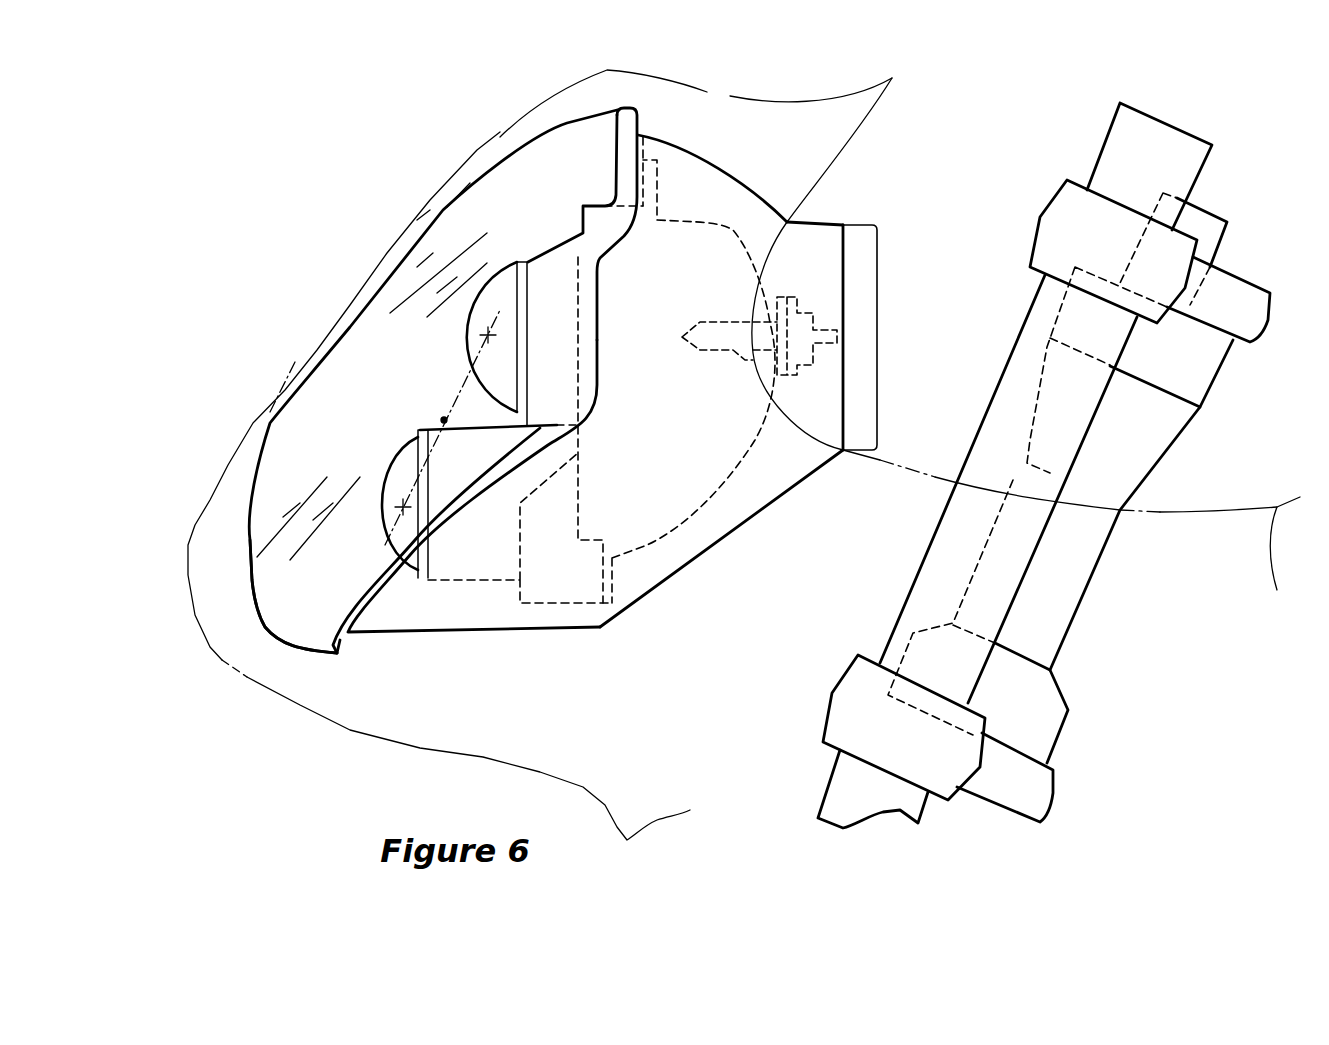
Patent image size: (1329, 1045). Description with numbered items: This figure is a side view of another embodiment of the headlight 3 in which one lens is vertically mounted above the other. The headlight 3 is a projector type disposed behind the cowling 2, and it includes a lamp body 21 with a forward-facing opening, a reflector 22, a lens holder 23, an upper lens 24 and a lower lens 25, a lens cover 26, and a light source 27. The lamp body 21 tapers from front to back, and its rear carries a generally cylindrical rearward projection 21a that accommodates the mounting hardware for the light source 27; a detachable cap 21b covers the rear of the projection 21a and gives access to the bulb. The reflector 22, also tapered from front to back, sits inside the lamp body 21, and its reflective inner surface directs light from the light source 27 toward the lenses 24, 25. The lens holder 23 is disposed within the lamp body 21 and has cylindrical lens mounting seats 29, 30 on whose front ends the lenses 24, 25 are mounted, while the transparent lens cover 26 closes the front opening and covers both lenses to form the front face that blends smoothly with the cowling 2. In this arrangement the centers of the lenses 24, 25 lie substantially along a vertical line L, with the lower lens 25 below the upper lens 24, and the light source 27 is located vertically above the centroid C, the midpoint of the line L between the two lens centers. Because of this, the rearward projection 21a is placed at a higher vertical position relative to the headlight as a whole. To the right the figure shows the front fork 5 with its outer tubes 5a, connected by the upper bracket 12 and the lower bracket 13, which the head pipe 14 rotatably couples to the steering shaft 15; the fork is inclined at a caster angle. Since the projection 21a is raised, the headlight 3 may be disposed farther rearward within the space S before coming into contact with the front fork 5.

The cowling 2 is at (363, 733).
The headlight 3 is at (576, 630).
The front fork 5 is at (1034, 554).
The outer tubes 5a is at (1087, 400).
The upper bracket 12 is at (1263, 327).
The lower bracket 13 is at (1053, 807).
The head pipe 14 is at (1067, 643).
The steering shaft 15 is at (1223, 233).
The lamp body 21 is at (708, 550).
The rearward projection 21a is at (820, 223).
The detachable cap 21b is at (882, 240).
The reflector 22 is at (647, 547).
The lens holder 23 is at (475, 585).
The upper lens 24 is at (493, 290).
The lower lens 25 is at (400, 477).
The lens cover 26 is at (250, 620).
The light source 27 is at (733, 353).
The lens mounting seat 29 is at (547, 253).
The lens mounting seat 30 is at (463, 450).
The centroid C is at (443, 420).
The vertical line L is at (467, 385).
The space S is at (1022, 111).